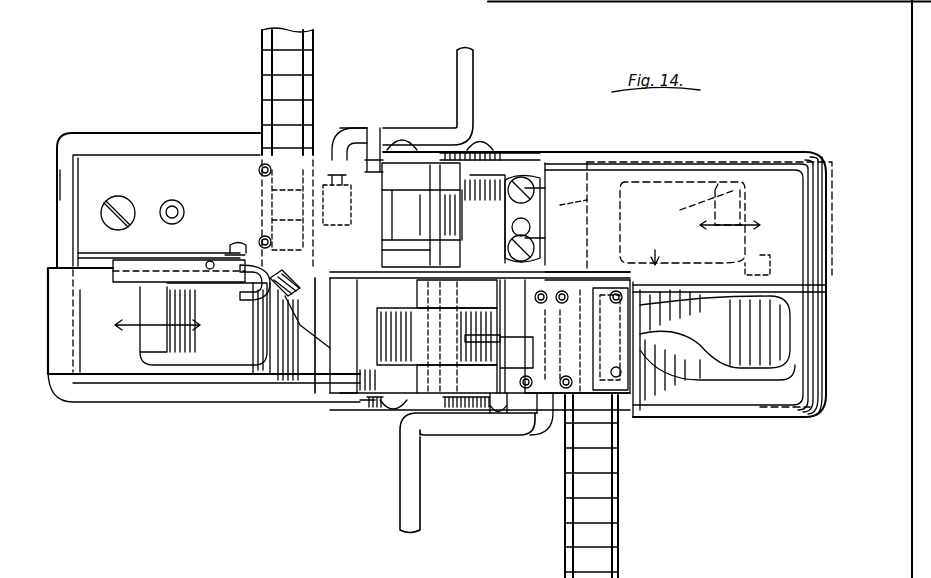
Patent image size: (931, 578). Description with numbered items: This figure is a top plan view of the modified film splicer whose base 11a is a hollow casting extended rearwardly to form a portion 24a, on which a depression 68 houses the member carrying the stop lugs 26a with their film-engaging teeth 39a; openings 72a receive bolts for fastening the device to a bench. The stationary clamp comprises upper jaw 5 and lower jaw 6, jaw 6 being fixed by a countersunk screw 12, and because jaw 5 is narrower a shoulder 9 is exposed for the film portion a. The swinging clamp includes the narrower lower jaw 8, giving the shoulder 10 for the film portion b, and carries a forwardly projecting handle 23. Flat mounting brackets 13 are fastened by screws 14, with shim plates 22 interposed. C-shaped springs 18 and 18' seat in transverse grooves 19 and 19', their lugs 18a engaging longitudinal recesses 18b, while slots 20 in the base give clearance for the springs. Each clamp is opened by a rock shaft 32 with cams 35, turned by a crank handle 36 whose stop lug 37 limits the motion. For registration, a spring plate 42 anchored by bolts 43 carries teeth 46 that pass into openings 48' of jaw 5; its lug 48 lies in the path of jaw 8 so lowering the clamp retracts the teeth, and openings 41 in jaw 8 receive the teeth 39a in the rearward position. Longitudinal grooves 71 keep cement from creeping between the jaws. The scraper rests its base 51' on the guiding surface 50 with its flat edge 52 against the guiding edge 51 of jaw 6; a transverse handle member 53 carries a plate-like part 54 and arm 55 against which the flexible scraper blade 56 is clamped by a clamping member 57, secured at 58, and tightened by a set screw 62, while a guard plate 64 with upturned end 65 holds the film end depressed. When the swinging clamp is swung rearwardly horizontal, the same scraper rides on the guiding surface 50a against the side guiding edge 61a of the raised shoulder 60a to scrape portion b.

The film portion a is at (250, 95).
The film portion b is at (622, 462).
The upper jaw 5 is at (330, 150).
The lower jaw 6 is at (174, 200).
The lower jaw 8 is at (548, 420).
The shoulder 9 is at (307, 322).
The shoulder 10 is at (553, 270).
The base 11a is at (174, 404).
The screw 12 is at (122, 197).
The mounting brackets 13 is at (495, 192).
The screws 14 is at (485, 150).
The C-shaped spring 18 is at (421, 215).
The C-shaped spring 18' is at (427, 336).
The projecting lugs 18a is at (457, 379).
The longitudinal recesses 18b is at (499, 336).
The transverse grooves 19 is at (406, 250).
The transverse grooves 19' is at (480, 341).
The slots 20 is at (357, 300).
The shim plates 22 is at (345, 405).
The handle 23 is at (717, 345).
The rearwardly extending portion 24a is at (725, 152).
The stop lugs 26a is at (645, 395).
The rock shaft 32 is at (352, 118).
The cams 35 is at (352, 218).
The handle 36 is at (420, 128).
The stop lug 37 is at (376, 128).
The teeth 39a is at (598, 428).
The openings 41 is at (610, 300).
The spring plate 42 is at (530, 195).
The bolts 43 is at (550, 240).
The teeth 46 is at (258, 172).
The lug 48 is at (333, 240).
The openings 48' is at (267, 149).
The guiding surface 50 is at (318, 405).
The guiding surface 50a is at (655, 200).
The guiding edge 51 is at (204, 267).
The scraper base 51' is at (441, 245).
The flat edge 52 is at (75, 265).
The transverse member 53 is at (740, 190).
The plate-like part 54 is at (130, 268).
The projecting arm 55 is at (190, 280).
The scraper blade 56 is at (218, 300).
The clamping member 57 is at (200, 252).
The bolt 58 is at (238, 243).
The raised shoulder 60a is at (755, 275).
The side guiding edge 61a is at (665, 270).
The set screw 62 is at (320, 393).
The guard plate 64 is at (351, 278).
The upturned forward end 65 is at (260, 385).
The depression 68 is at (770, 378).
The longitudinal grooves 71 is at (103, 255).
The openings 72a is at (172, 200).